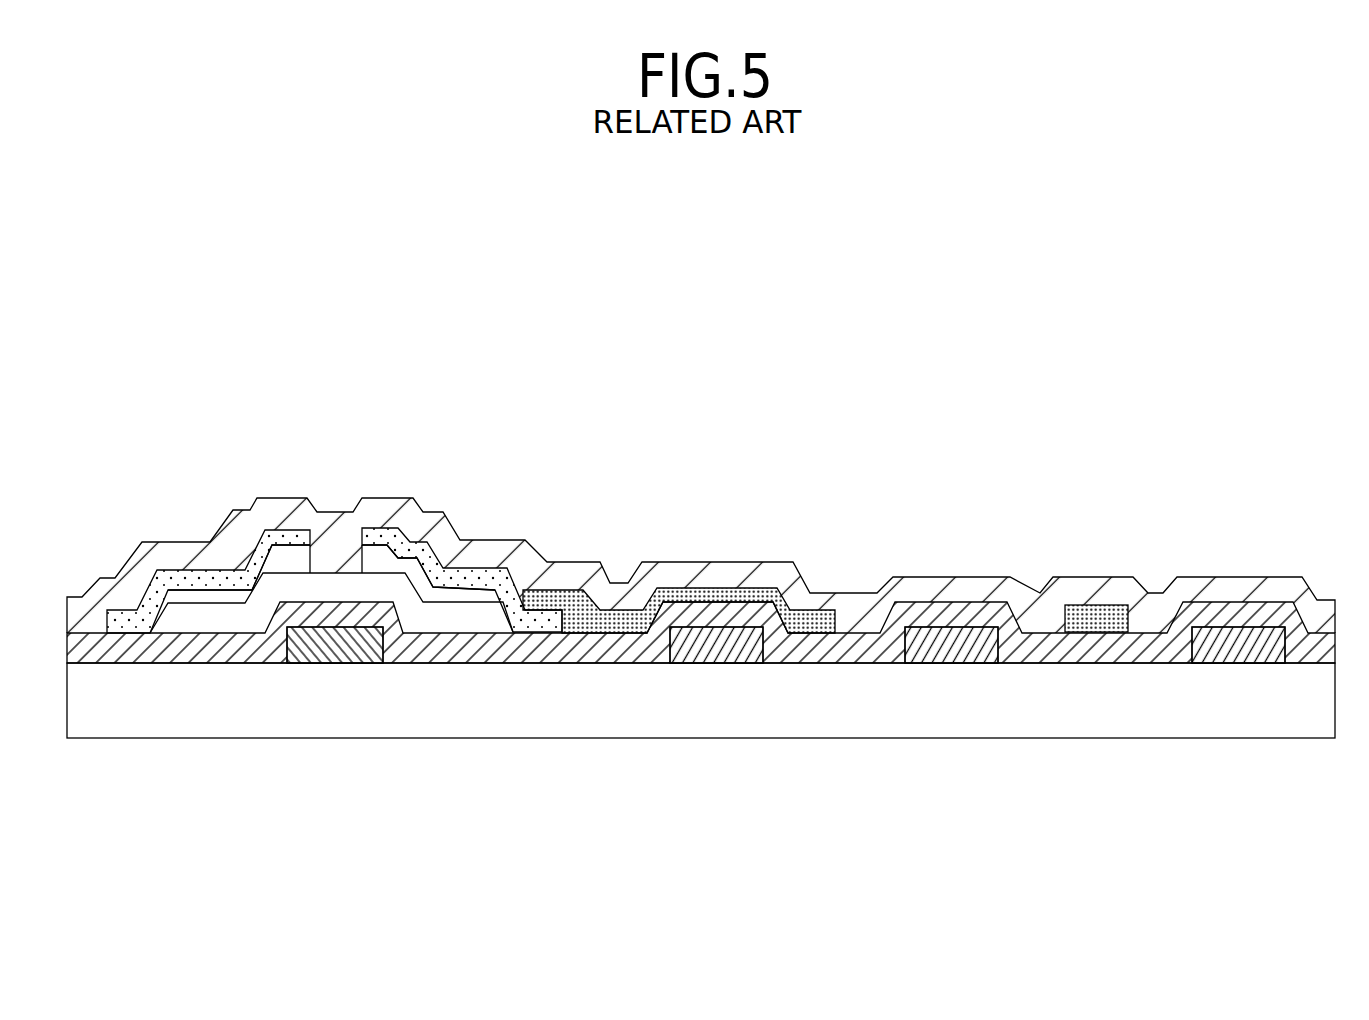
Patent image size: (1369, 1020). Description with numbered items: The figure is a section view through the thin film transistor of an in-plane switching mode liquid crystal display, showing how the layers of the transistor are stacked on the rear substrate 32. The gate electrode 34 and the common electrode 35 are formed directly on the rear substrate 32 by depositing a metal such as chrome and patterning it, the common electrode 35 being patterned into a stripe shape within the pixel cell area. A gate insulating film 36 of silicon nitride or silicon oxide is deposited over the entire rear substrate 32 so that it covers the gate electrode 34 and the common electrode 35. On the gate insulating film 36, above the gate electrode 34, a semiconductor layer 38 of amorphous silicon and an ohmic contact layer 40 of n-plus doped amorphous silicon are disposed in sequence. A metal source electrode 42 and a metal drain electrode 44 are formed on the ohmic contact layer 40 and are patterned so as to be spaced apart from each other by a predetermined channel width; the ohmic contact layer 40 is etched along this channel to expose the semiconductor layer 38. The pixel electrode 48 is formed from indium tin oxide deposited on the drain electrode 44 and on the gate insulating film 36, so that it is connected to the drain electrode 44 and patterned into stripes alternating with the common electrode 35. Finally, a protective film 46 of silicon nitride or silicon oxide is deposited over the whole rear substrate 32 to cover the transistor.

The rear substrate 32 is at (874, 720).
The gate electrode 34 is at (333, 655).
The common electrode 35 is at (701, 650).
The gate insulating film 36 is at (517, 640).
The semiconductor layer 38 is at (223, 620).
The ohmic contact layer 40 is at (187, 594).
The source electrode 42 is at (256, 556).
The drain electrode 44 is at (463, 573).
The protective film 46 is at (391, 500).
The pixel electrode 48 is at (822, 607).